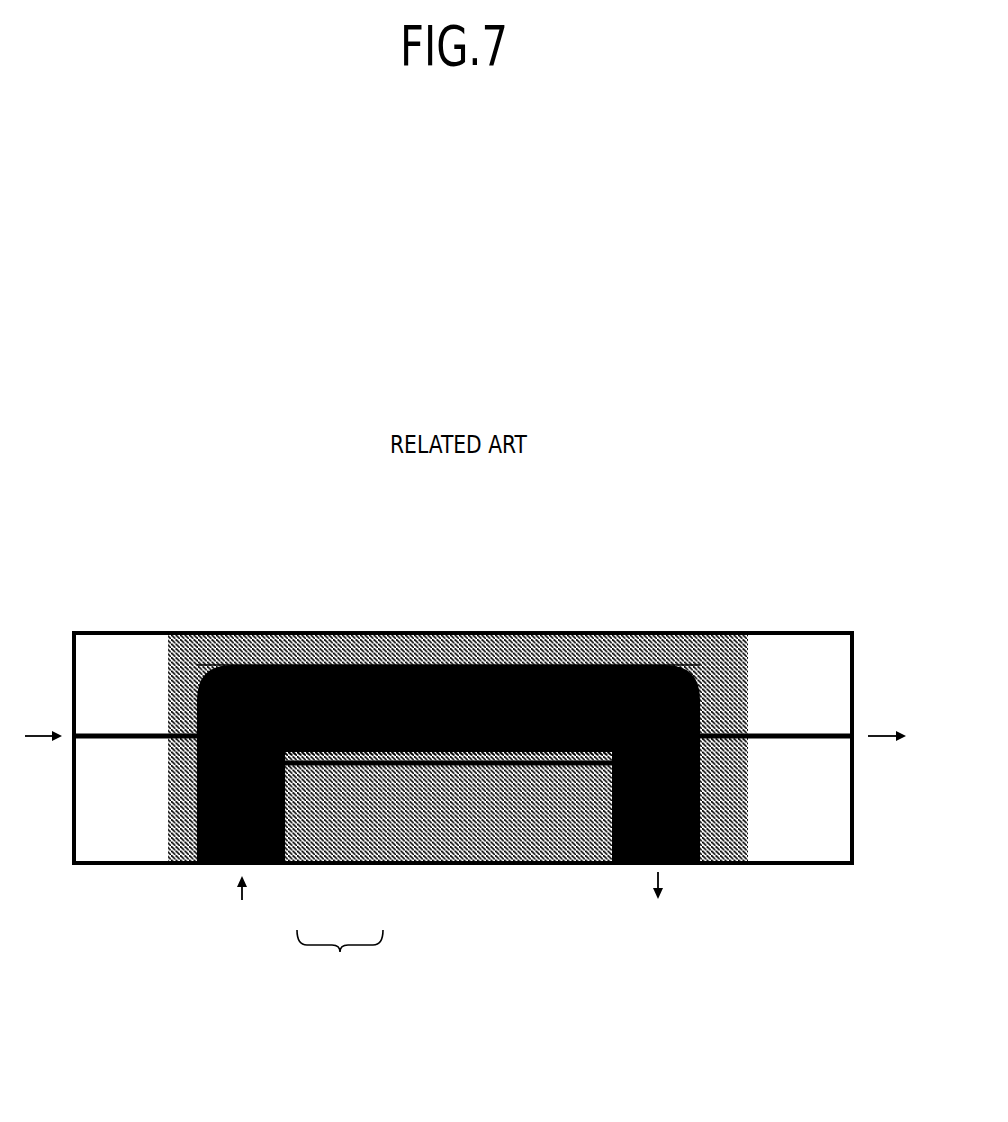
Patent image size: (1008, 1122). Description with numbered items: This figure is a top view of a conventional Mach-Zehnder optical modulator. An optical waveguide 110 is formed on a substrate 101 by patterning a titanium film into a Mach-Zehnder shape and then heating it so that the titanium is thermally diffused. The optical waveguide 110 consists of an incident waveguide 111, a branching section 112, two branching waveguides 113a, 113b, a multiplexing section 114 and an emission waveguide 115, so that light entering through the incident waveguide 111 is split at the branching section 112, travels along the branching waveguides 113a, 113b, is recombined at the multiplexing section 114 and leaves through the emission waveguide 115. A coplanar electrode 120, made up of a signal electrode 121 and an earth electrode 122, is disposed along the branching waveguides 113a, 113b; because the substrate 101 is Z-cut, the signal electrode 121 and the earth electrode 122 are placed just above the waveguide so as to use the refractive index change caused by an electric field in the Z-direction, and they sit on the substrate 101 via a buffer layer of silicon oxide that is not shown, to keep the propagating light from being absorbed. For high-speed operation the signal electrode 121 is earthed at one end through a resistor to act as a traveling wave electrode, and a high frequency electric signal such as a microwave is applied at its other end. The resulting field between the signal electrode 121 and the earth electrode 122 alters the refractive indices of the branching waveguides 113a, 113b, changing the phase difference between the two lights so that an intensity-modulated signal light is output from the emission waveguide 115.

The optical waveguide 110 is at (125, 580).
The substrate 101 is at (787, 855).
The incident waveguide 111 is at (137, 735).
The branching section 112 is at (182, 675).
The branching waveguide 113a is at (315, 664).
The branching waveguide 113b is at (410, 664).
The multiplexing section 114 is at (700, 695).
The emission waveguide 115 is at (770, 735).
The coplanar electrode 120 is at (340, 958).
The signal electrode 121 is at (270, 863).
The earth electrode 122 is at (392, 850).